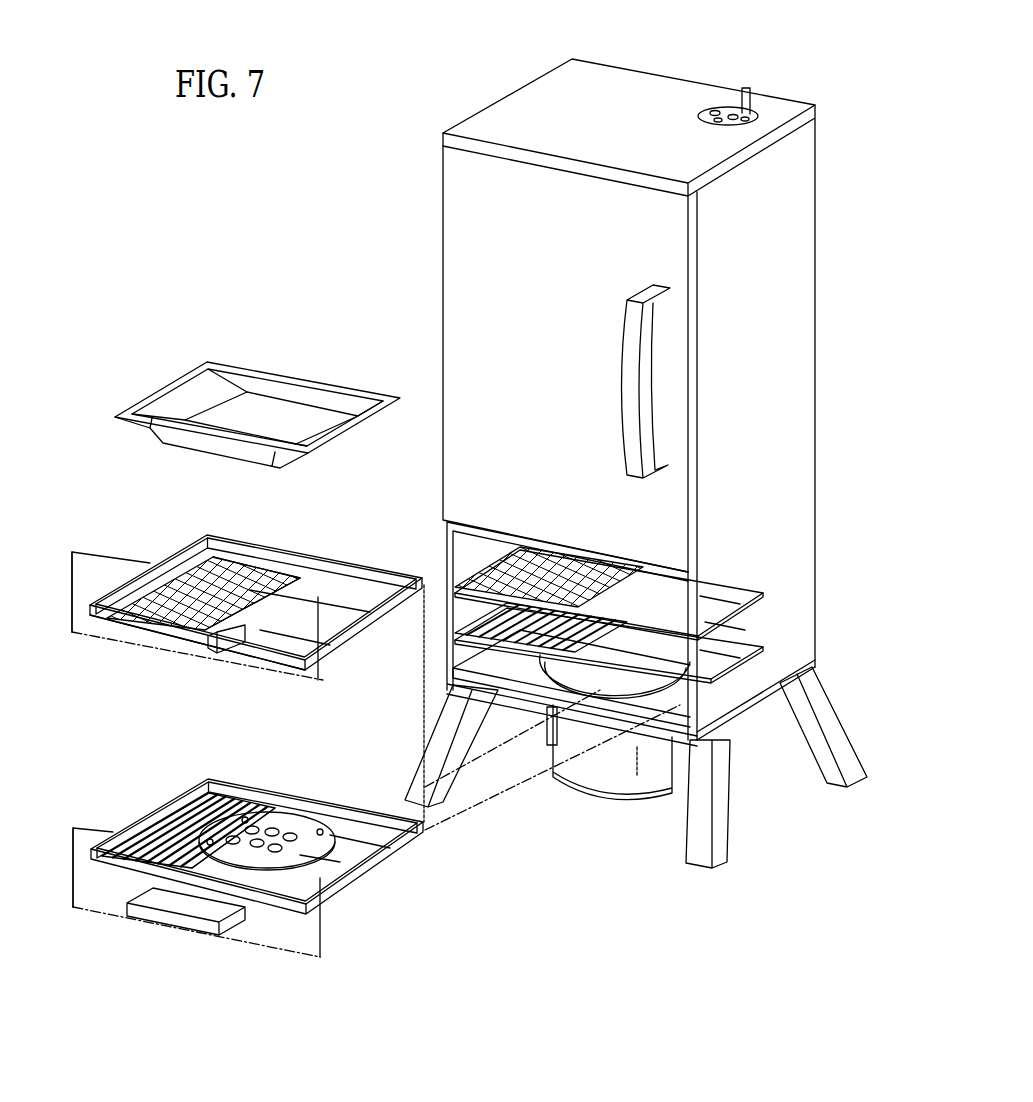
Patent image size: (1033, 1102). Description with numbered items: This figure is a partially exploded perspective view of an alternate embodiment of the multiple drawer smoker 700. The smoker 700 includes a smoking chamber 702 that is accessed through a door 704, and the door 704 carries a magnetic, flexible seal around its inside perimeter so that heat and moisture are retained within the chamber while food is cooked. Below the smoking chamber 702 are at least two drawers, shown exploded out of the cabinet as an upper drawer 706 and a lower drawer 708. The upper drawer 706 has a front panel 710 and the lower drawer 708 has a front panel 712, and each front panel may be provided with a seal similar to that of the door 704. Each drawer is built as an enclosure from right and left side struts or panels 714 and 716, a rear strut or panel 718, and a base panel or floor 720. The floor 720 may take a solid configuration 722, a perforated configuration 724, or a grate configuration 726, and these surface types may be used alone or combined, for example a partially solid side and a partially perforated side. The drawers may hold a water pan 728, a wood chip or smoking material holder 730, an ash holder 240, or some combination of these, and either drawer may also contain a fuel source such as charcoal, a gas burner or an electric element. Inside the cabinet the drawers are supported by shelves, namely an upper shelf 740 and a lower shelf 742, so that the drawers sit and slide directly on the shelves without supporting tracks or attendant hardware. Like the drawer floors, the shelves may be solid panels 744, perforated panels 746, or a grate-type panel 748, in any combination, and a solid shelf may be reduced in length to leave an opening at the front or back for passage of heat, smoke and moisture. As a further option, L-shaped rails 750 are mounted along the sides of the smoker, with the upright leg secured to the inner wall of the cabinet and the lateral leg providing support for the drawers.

The smoker 700 is at (713, 56).
The smoking chamber 702 is at (434, 218).
The door 704 is at (668, 492).
The upper drawer 706 is at (66, 611).
The lower drawer 708 is at (65, 851).
The front panel 710 is at (112, 637).
The front panel 712 is at (102, 905).
The right side strut or panel 714 is at (335, 651).
The left side strut or panel 716 is at (107, 592).
The rear strut or panel 718 is at (258, 546).
The base panel or floor 720 is at (281, 640).
The solid configuration 722 is at (352, 582).
The perforated configuration 724 is at (207, 552).
The grate configuration 726 is at (160, 803).
The water pan 728 is at (298, 392).
The wood chip/smoking material holder 730 is at (288, 830).
The upper shelf 740 is at (743, 582).
The lower shelf 742 is at (775, 644).
The solid panel 744 is at (737, 604).
The perforated panel 746 is at (549, 543).
The grate-type panel 748 is at (478, 657).
The L-shaped rail 750 is at (447, 662).
The ash holder 240 is at (588, 795).